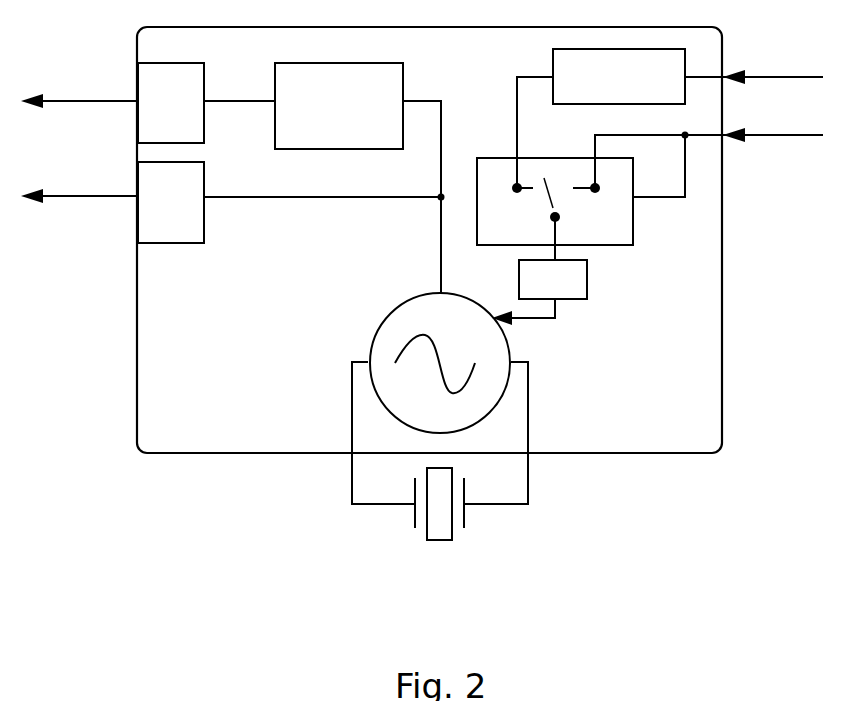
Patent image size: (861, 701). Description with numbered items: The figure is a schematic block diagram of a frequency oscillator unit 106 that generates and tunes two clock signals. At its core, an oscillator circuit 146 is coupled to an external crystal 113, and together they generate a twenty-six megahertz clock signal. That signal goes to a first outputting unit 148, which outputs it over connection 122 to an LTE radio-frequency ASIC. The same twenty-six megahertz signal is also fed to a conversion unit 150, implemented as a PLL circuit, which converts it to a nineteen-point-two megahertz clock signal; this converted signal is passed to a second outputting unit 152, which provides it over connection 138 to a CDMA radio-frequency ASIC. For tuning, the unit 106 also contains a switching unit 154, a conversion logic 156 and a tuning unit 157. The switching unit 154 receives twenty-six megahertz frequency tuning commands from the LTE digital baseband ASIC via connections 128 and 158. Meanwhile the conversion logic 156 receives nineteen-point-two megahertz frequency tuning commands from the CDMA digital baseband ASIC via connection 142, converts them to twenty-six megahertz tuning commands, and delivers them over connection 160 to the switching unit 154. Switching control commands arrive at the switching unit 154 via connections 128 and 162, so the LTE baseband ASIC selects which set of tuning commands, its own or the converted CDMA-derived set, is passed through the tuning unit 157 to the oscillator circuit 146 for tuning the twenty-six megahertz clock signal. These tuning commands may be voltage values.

The frequency oscillator unit 106 is at (429, 240).
The second outputting unit 152 is at (171, 103).
The first outputting unit 148 is at (171, 202).
The conversion unit 150 is at (322, 178).
The conversion logic 156 is at (619, 76).
The switching unit 154 is at (555, 201).
The tuning unit 157 is at (539, 271).
The oscillator circuit 146 is at (422, 363).
The external crystal 113 is at (440, 469).
The connection 138 is at (79, 92).
The connection 122 is at (79, 207).
The connection 142 is at (754, 68).
The connection 128 is at (753, 146).
The connection 160 is at (535, 132).
The connection 158 is at (640, 151).
The connection 162 is at (662, 179).